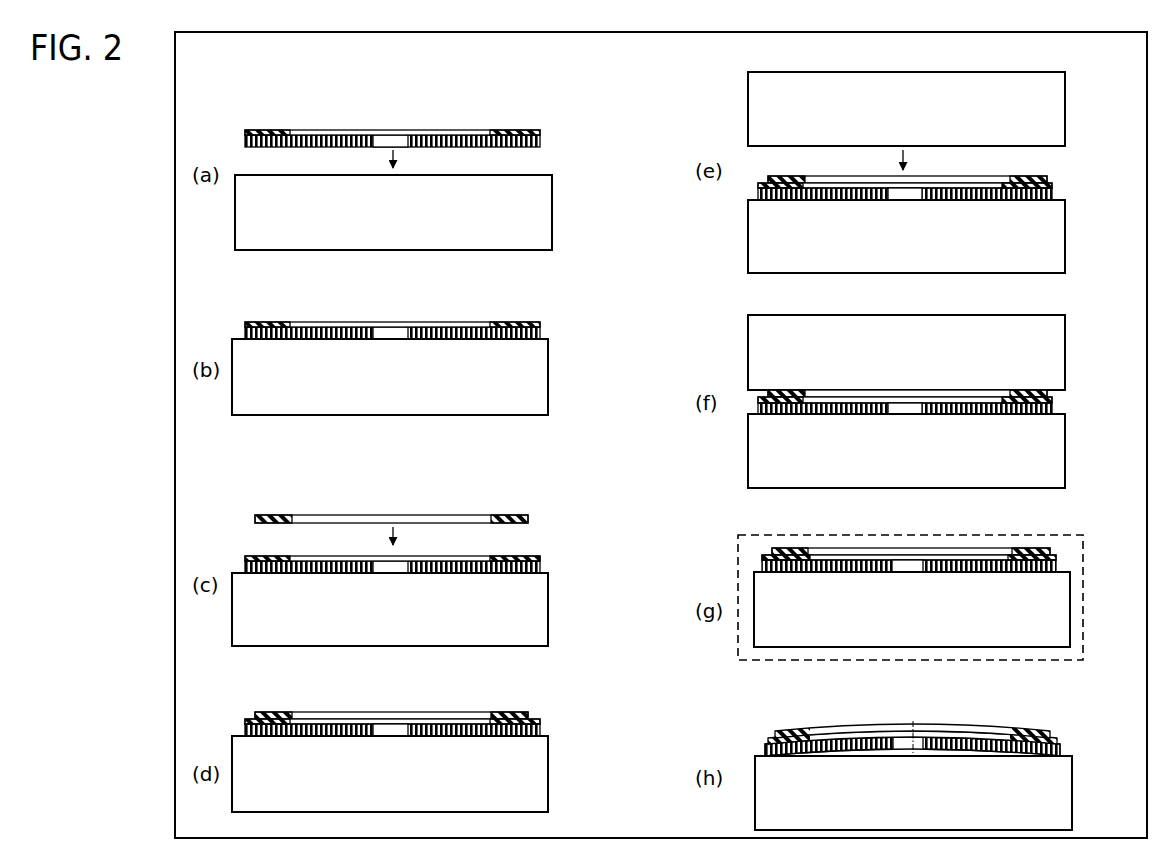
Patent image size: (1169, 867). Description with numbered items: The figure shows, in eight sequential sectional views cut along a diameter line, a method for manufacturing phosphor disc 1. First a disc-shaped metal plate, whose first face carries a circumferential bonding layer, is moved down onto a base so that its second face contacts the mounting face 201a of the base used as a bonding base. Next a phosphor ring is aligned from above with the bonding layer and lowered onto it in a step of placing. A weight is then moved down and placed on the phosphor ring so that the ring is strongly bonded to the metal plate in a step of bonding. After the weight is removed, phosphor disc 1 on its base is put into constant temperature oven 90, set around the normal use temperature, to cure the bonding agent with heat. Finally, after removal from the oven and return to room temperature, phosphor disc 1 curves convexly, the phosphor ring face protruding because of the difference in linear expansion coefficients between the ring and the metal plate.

The phosphor disc 1 is at (951, 717).
The constant temperature oven 90 is at (1085, 643).
The mounting face 201a is at (517, 175).